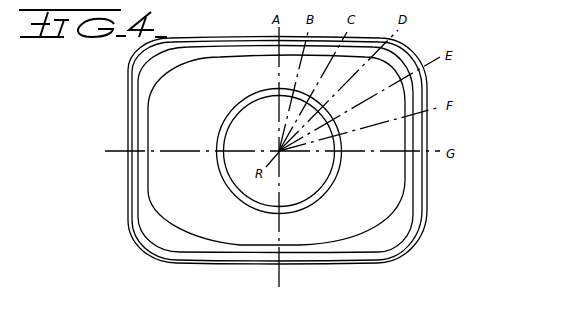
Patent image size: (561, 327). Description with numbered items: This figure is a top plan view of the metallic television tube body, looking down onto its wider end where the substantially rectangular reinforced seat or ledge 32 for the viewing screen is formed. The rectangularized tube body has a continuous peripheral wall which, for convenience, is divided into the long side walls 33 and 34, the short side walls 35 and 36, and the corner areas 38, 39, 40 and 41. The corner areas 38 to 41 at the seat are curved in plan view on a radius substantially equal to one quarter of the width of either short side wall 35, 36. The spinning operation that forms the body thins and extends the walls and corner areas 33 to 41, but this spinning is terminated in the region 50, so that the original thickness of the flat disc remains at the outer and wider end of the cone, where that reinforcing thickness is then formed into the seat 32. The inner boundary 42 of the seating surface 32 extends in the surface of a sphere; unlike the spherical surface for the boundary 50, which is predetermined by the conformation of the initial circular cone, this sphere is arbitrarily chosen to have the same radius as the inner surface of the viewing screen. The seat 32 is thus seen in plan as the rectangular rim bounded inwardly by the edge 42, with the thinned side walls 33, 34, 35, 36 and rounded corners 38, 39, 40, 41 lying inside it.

The reinforced seat or ledge 32 is at (418, 195).
The long side wall 33 is at (262, 76).
The long side wall 34 is at (274, 235).
The short side wall 35 is at (387, 176).
The short side wall 36 is at (184, 175).
The corner area 38 is at (192, 101).
The corner area 39 is at (217, 224).
The corner area 40 is at (377, 224).
The corner area 41 is at (387, 112).
The inner boundary of the seating surface 42 is at (408, 227).
The region where spinning is terminated 50 is at (148, 193).